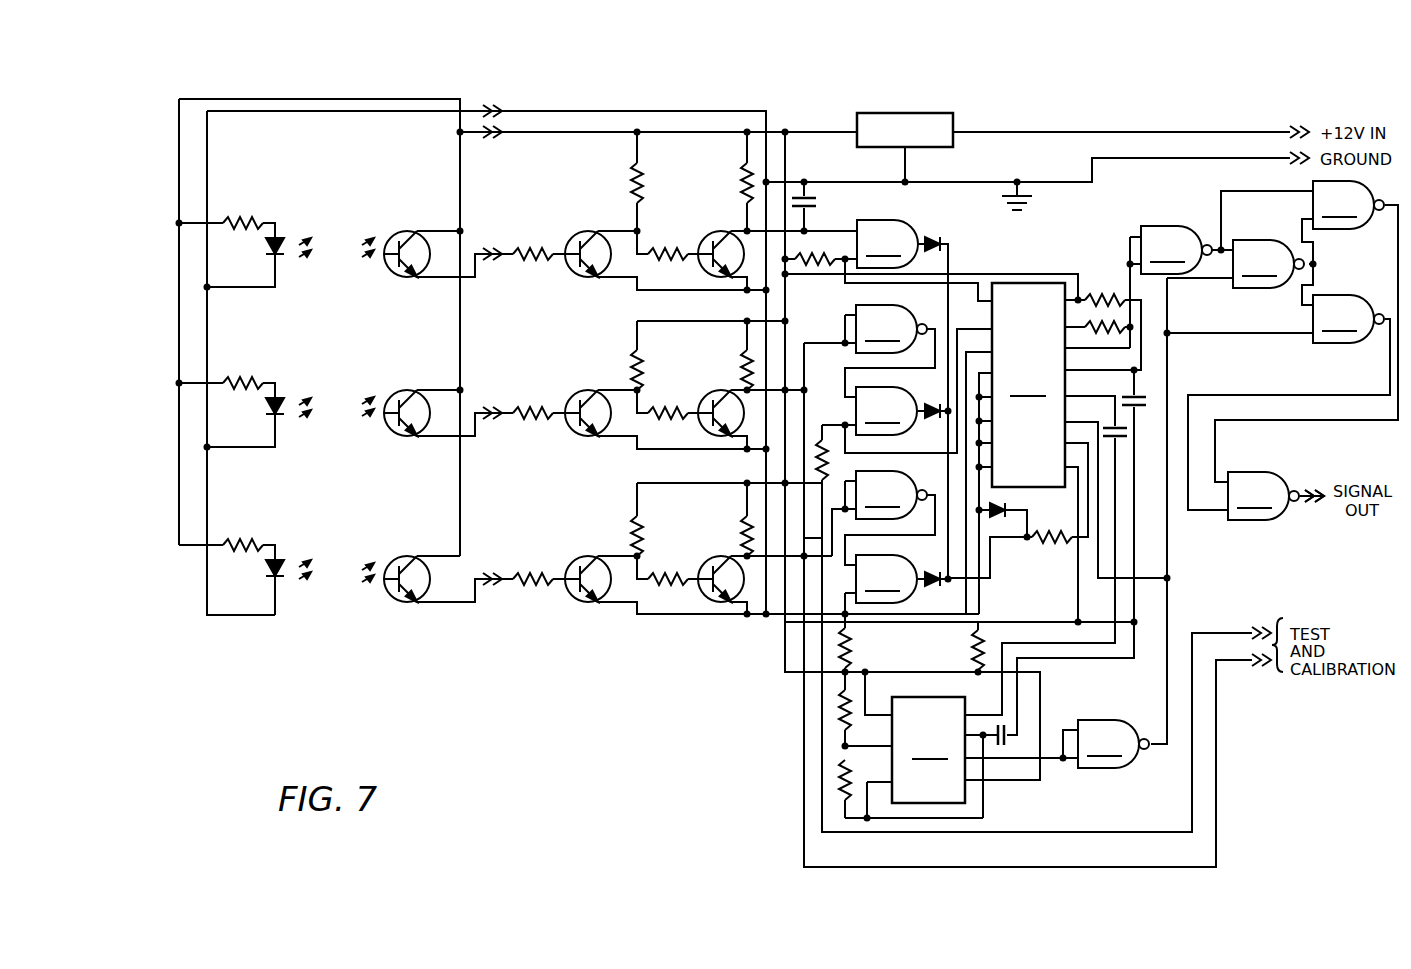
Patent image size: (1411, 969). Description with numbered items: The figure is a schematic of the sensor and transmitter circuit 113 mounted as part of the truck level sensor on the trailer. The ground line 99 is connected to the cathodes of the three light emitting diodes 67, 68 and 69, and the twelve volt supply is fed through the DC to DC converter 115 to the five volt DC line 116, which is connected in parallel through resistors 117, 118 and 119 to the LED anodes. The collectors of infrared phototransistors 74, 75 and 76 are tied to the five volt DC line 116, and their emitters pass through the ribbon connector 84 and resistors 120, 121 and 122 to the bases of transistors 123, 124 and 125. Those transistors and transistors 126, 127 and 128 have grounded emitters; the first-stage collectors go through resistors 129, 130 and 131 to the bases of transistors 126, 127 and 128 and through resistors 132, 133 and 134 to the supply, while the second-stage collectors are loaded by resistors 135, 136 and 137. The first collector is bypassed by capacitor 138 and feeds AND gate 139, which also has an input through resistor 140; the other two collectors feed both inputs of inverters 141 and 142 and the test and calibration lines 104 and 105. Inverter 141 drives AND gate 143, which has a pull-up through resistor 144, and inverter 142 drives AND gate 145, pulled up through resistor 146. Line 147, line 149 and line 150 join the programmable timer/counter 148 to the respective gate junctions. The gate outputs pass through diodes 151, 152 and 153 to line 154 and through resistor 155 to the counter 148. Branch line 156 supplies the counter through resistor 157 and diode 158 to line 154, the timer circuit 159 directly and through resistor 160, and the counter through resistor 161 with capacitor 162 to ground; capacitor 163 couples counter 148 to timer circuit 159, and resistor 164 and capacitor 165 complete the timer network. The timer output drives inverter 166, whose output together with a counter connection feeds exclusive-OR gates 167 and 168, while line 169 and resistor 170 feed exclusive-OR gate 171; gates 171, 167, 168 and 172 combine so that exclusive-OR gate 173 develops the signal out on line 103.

The resistor 117 is at (243, 221).
The resistor 118 is at (250, 380).
The resistor 119 is at (243, 543).
The light emitting diode 67 is at (276, 238).
The light emitting diode 68 is at (276, 398).
The light emitting diode 69 is at (276, 560).
The infrared phototransistor 74 is at (401, 240).
The infrared phototransistor 75 is at (402, 398).
The infrared phototransistor 76 is at (400, 602).
The ribbon connector 84 is at (490, 608).
The sensor and transmitter circuit 113 is at (613, 665).
The resistor 120 is at (537, 265).
The resistor 121 is at (530, 425).
The resistor 122 is at (535, 570).
The transistor 123 is at (570, 238).
The transistor 124 is at (570, 398).
The transistor 125 is at (583, 562).
The transistor 126 is at (712, 240).
The transistor 127 is at (716, 398).
The transistor 128 is at (710, 565).
The resistor 129 is at (678, 252).
The resistor 130 is at (678, 411).
The resistor 131 is at (668, 590).
The resistor 132 is at (637, 180).
The resistor 133 is at (637, 350).
The resistor 134 is at (637, 515).
The resistor 135 is at (747, 180).
The resistor 136 is at (747, 350).
The resistor 137 is at (747, 520).
The capacitor 138 is at (812, 202).
The AND gate 139 is at (887, 244).
The resistor 140 is at (838, 256).
The inverter 141 is at (891, 329).
The inverter 142 is at (891, 495).
The AND gate 143 is at (886, 411).
The resistor 144 is at (819, 440).
The AND gate 145 is at (886, 579).
The resistor 146 is at (848, 650).
The line 147 is at (846, 284).
The programmable timer/counter 148 is at (1028, 385).
The line 149 is at (962, 327).
The line 150 is at (970, 352).
The diode 151 is at (945, 238).
The diode 152 is at (935, 418).
The diode 153 is at (935, 586).
The line 154 is at (995, 565).
The resistor 155 is at (1058, 545).
The branch line 156 is at (785, 642).
The resistor 157 is at (978, 650).
The diode 158 is at (1008, 512).
The timer circuit 159 is at (928, 750).
The resistor 160 is at (845, 710).
The resistor 161 is at (1100, 296).
The capacitor 162 is at (1138, 398).
The capacitor 163 is at (1120, 430).
The resistor 164 is at (845, 778).
The capacitor 165 is at (1008, 750).
The inverter 166 is at (1113, 744).
The exclusive-OR gate 167 is at (1268, 264).
The exclusive-OR gate 168 is at (1348, 319).
The line 169 is at (1141, 345).
The resistor 170 is at (1122, 323).
The exclusive-OR gate 171 is at (1176, 250).
The exclusive-OR gate 172 is at (1348, 205).
The exclusive-OR gate 173 is at (1263, 496).
The ground line 99 is at (985, 182).
The line 103 is at (1305, 490).
The test and calibration line 104 is at (1222, 632).
The test and calibration line 105 is at (1218, 748).
The DC to DC converter 115 is at (953, 122).
The +5 volt DC line 116 is at (820, 130).